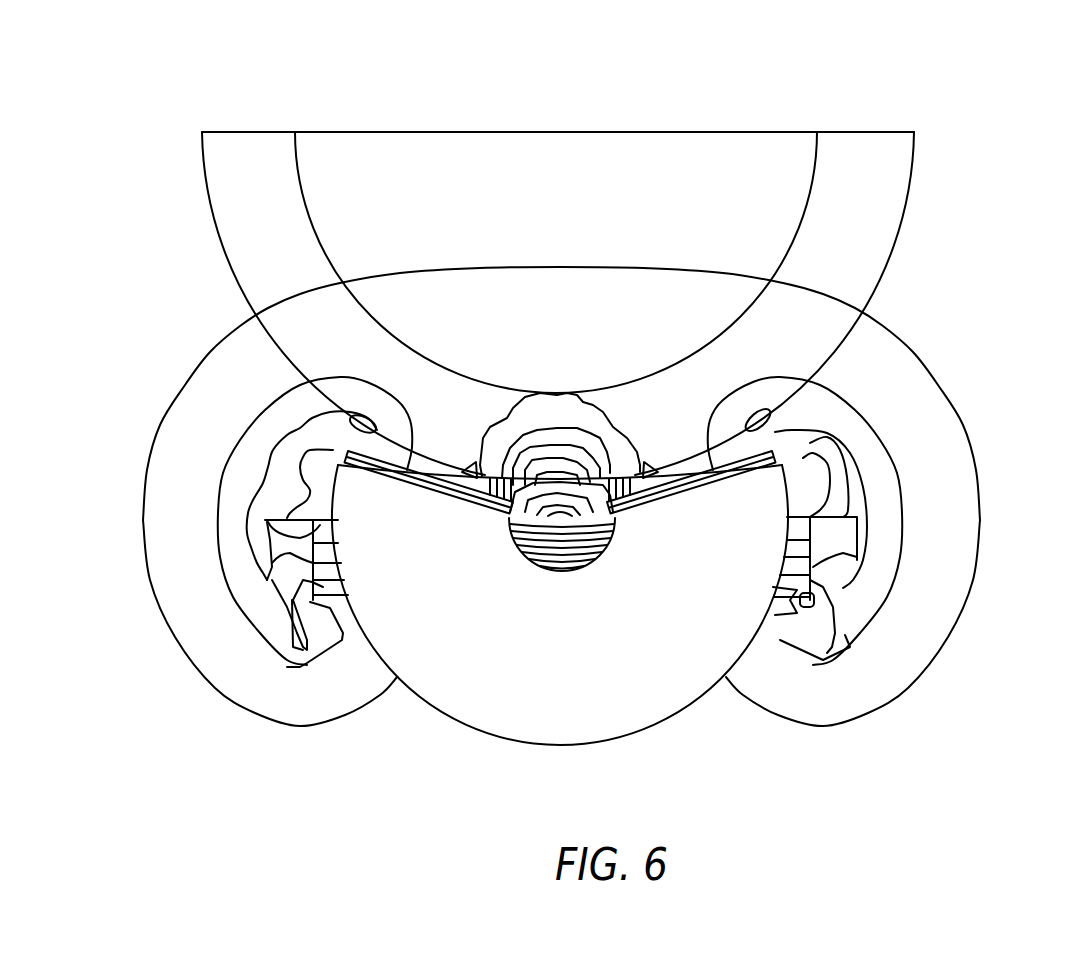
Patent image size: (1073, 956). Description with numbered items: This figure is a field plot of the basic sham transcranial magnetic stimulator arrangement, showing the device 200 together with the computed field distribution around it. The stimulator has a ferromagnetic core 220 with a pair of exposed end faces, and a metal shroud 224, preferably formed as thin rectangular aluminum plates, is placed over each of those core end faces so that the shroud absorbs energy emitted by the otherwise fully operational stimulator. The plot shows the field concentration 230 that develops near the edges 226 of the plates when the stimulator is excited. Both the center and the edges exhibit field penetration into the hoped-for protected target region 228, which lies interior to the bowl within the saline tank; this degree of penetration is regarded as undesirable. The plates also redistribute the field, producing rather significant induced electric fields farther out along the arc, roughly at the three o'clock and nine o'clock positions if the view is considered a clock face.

The housing 200 is at (708, 166).
The ferromagnetic core 220 is at (622, 707).
The metal shroud 224 is at (405, 468).
The edges of the plates 226 is at (352, 424).
The protected target region 228 is at (557, 392).
The field concentration 230 is at (860, 575).